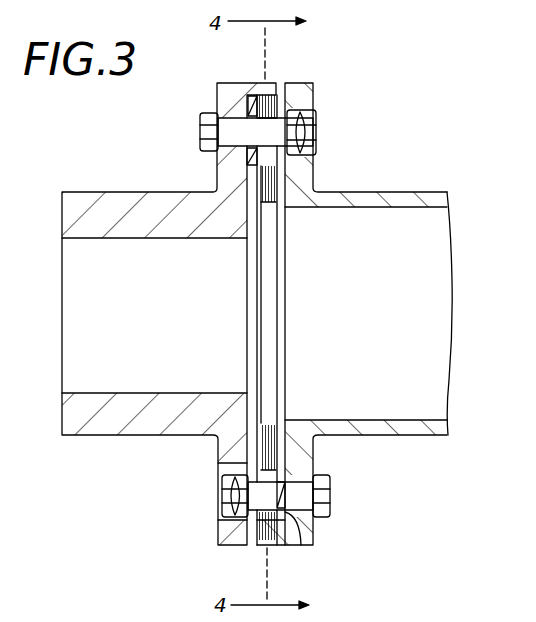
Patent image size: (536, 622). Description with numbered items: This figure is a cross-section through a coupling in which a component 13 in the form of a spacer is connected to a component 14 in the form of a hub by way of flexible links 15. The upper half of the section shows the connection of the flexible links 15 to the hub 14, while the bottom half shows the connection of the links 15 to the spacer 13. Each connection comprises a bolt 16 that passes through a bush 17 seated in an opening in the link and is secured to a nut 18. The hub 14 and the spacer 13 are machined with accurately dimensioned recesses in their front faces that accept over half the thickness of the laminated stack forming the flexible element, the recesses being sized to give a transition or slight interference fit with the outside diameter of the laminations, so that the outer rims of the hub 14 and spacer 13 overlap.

The spacer 13 is at (340, 193).
The hub 14 is at (233, 100).
The flexible links 15 is at (266, 97).
The bolt 16 is at (260, 133).
The bush 17 is at (244, 150).
The nut 18 is at (294, 148).